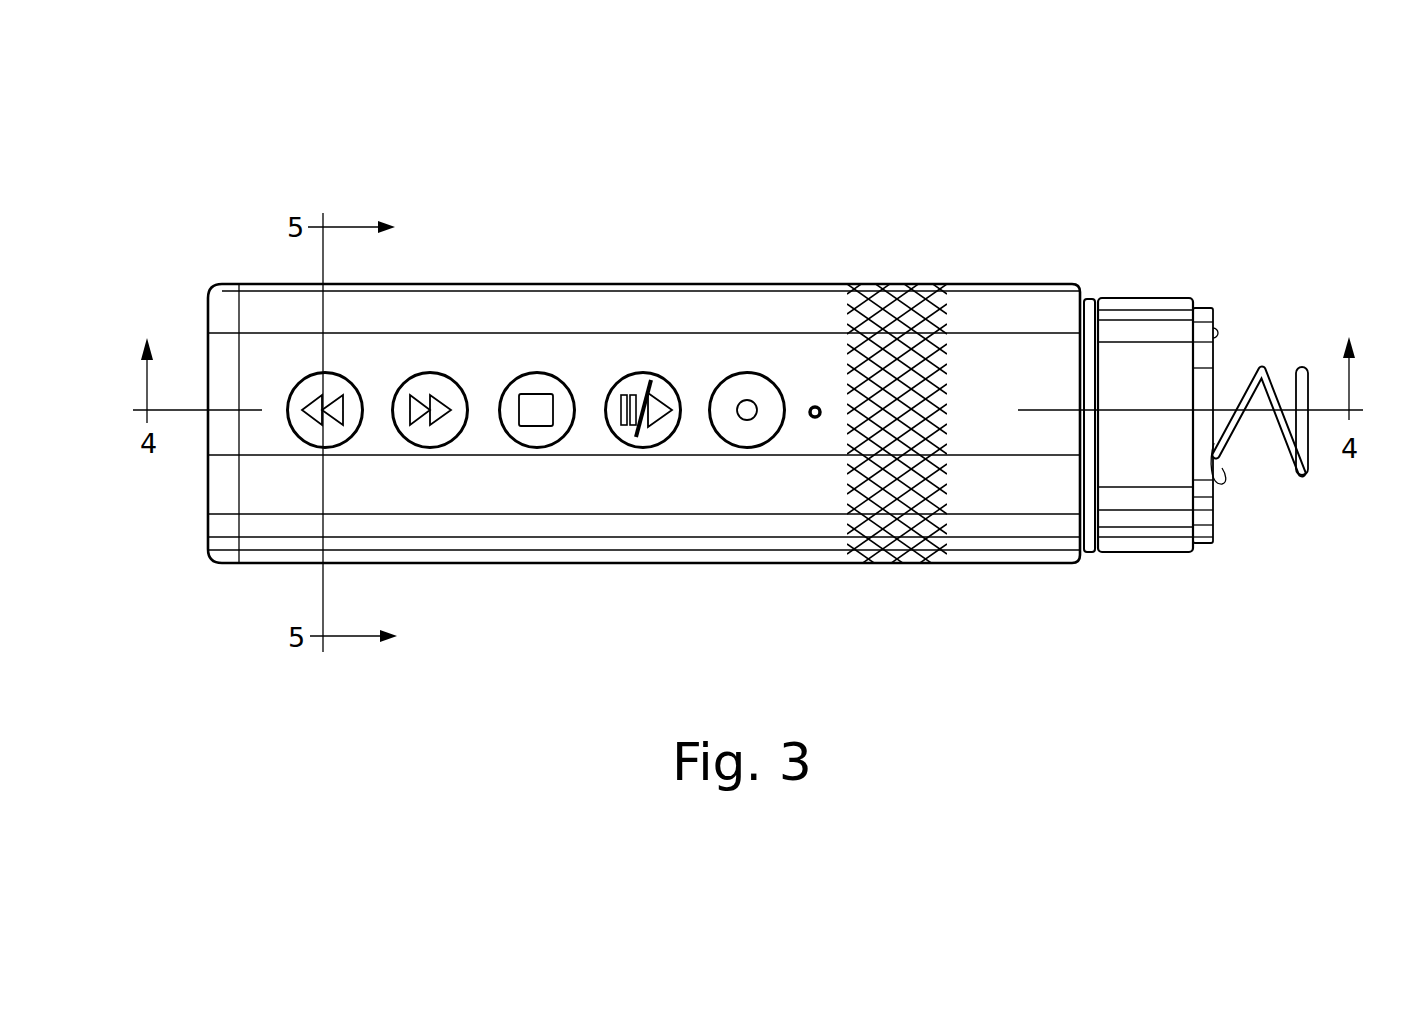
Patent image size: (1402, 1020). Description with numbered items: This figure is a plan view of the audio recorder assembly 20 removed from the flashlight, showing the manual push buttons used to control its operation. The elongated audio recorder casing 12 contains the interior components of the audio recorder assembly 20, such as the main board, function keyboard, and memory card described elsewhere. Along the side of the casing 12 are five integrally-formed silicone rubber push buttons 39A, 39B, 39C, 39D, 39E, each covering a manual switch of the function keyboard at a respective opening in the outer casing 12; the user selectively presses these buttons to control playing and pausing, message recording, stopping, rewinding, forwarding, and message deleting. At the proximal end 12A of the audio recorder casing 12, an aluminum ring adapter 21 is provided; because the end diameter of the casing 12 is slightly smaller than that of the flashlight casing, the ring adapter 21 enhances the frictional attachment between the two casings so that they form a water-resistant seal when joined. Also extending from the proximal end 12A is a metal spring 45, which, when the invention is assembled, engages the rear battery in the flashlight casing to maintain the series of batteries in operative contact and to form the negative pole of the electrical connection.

The audio recorder assembly 20 is at (248, 206).
The audio recorder casing 12 is at (685, 283).
The end of the audio recorder casing 12A is at (1203, 308).
The aluminum ring adapter 21 is at (1137, 553).
The silicone rubber push button 39A is at (300, 428).
The silicone rubber push button 39B is at (430, 433).
The silicone rubber push button 39C is at (538, 435).
The silicone rubber push button 39D is at (647, 435).
The silicone rubber push button 39E is at (746, 432).
The metal spring 45 is at (1302, 475).